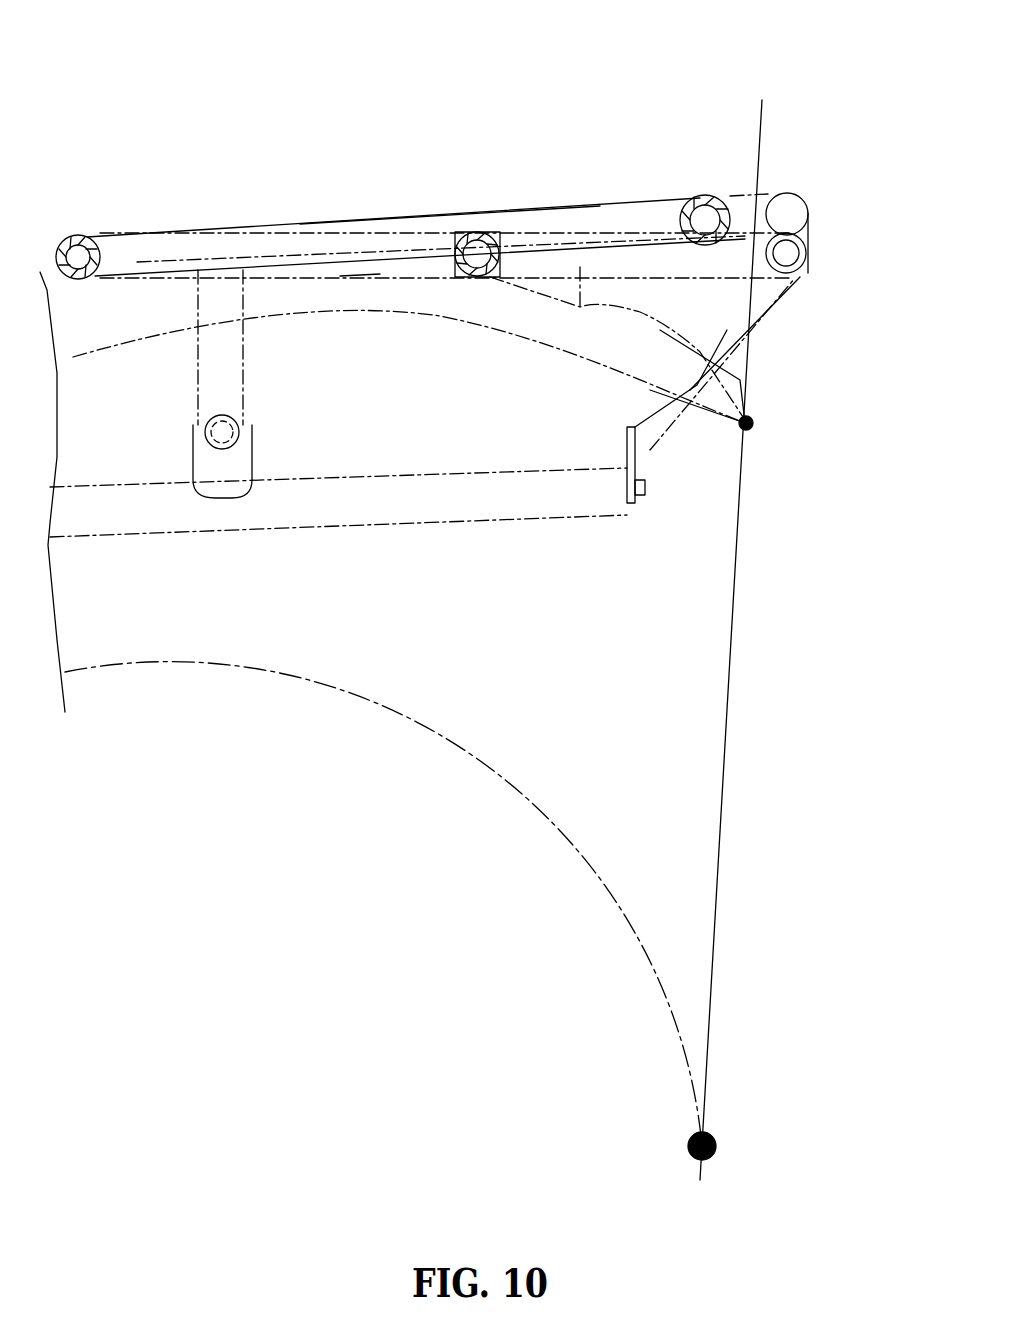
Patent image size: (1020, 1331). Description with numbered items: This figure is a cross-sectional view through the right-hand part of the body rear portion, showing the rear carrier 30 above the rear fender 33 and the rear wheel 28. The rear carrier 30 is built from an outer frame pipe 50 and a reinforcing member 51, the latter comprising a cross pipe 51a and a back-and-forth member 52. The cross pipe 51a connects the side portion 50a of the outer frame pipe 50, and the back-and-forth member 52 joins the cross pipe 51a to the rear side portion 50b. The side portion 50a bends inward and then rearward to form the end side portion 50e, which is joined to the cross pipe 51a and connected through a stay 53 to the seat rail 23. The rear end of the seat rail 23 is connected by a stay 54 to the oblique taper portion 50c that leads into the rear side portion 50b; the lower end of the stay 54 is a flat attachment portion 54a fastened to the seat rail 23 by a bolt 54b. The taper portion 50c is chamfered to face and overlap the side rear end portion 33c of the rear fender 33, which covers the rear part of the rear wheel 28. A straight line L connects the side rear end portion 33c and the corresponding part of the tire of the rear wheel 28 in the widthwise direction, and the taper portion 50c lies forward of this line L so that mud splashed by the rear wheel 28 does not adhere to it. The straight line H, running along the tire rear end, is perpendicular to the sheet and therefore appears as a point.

The rear carrier 30 is at (218, 188).
The outer frame pipe 50 is at (350, 215).
The side portion 50a is at (607, 208).
The rear side portion 50b is at (795, 268).
The taper portion 50c is at (700, 198).
The end side portion 50e is at (358, 272).
The reinforcing member 51 is at (488, 282).
The cross pipe 51a is at (458, 282).
The back-and-forth member 52 is at (577, 310).
The stay 53 is at (238, 390).
The stay 54 is at (697, 385).
The attachment portion 54a is at (630, 467).
The bolt 54b is at (645, 487).
The seat rail 23 is at (402, 506).
The rear wheel 28 is at (583, 857).
The rear fender 33 is at (102, 355).
The side rear end portion 33c is at (752, 423).
The straight line L is at (735, 624).
The straight line H is at (688, 1140).